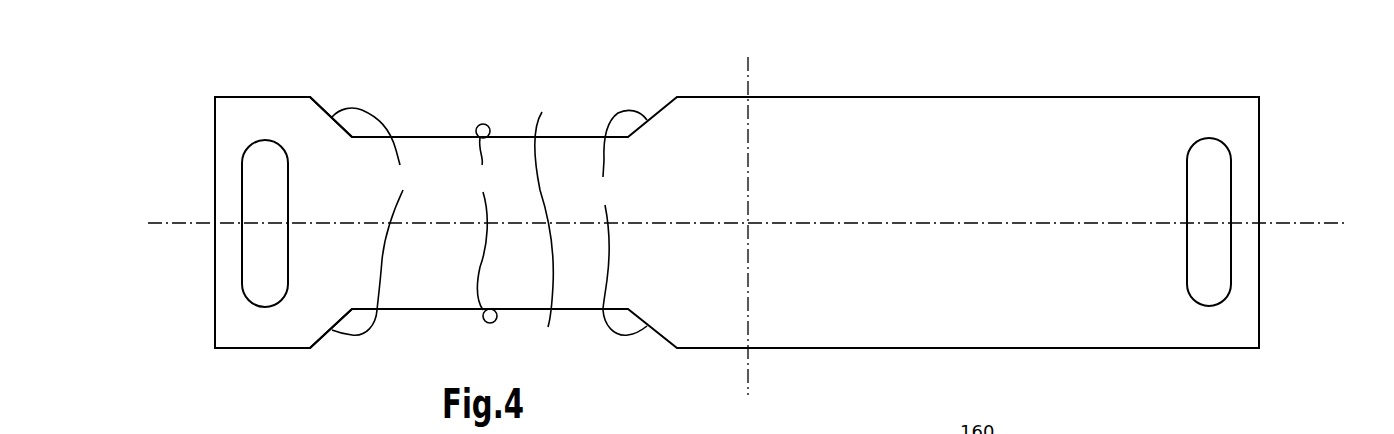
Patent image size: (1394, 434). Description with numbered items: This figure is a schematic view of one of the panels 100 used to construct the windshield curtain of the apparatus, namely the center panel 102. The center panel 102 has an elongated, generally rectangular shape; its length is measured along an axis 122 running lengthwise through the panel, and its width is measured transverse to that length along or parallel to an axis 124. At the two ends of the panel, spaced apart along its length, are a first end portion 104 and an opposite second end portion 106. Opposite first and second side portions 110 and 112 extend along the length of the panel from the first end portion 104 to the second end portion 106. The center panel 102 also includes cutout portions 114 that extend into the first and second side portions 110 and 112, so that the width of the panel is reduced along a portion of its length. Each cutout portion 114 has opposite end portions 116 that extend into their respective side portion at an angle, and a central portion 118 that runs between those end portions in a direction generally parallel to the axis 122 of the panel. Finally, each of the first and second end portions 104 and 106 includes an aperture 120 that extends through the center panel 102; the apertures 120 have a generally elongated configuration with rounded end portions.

The panels 100 is at (456, 92).
The center panel 102 is at (570, 59).
The first end portion 104 is at (260, 118).
The second end portion 106 is at (1181, 115).
The first side portion 110 is at (915, 118).
The second side portion 112 is at (967, 317).
The cutout portion 114 is at (535, 207).
The end portions of cutout portion 116 is at (489, 221).
The central portion of cutout portion 118 is at (482, 223).
The aperture 120 is at (253, 185).
The axis 122 is at (1283, 223).
The axis 124 is at (748, 77).